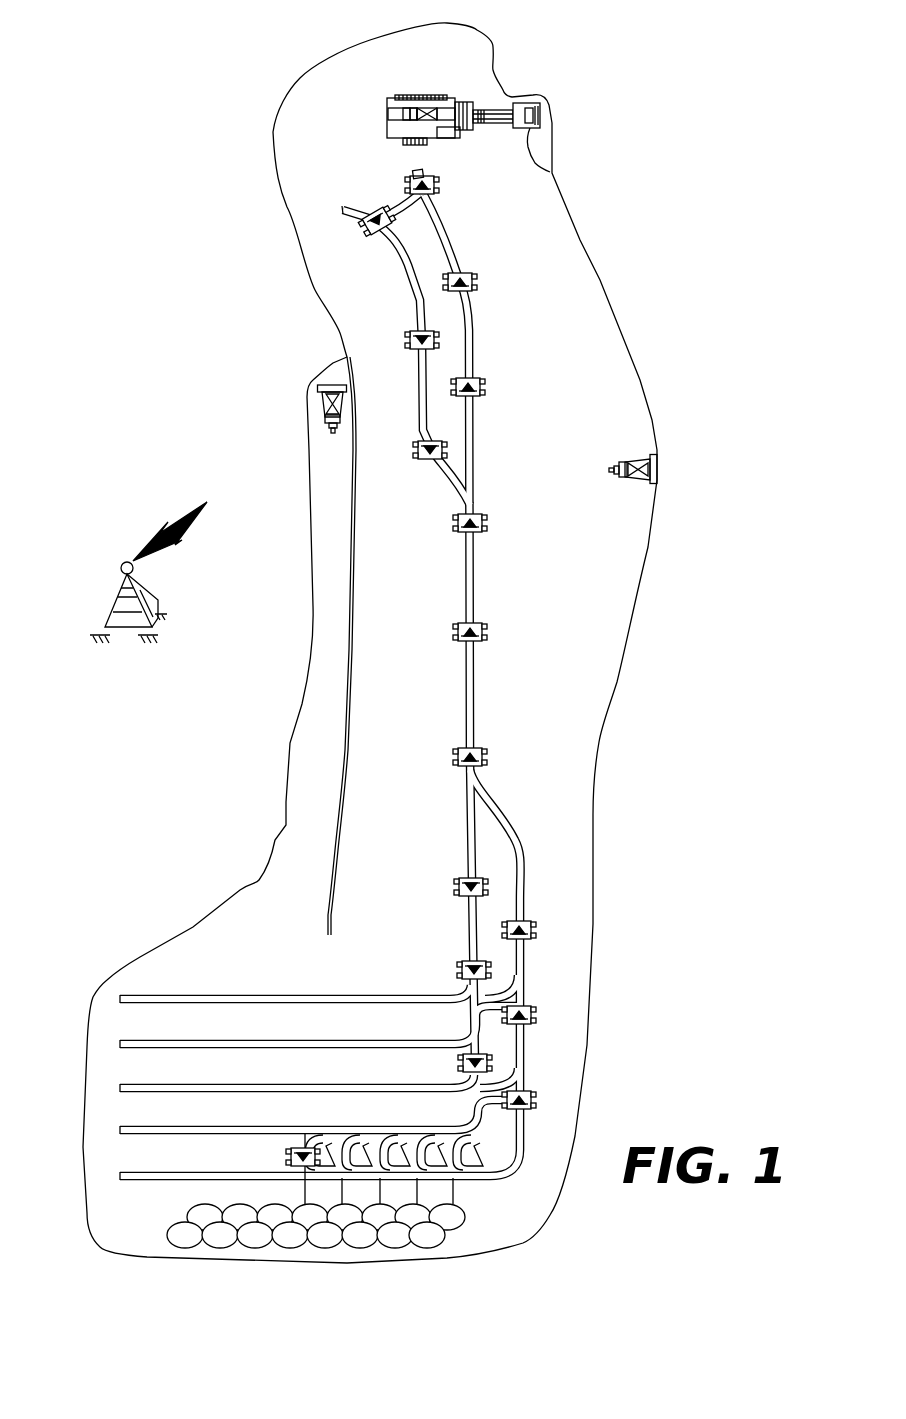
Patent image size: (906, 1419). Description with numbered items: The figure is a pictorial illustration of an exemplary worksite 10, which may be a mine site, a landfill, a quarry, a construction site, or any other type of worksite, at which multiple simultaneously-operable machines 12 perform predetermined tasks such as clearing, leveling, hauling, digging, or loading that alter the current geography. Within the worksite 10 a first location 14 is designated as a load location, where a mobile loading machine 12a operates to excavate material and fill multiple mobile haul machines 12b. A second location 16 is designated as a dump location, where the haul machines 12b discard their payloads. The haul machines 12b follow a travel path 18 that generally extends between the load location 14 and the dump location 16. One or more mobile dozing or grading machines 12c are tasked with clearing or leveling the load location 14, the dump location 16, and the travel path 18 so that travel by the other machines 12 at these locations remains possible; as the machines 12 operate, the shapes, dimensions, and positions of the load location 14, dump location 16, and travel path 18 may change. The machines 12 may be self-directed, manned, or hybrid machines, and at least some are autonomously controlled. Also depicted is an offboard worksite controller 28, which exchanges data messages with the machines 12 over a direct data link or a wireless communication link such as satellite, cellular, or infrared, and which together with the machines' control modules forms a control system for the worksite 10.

The worksite 10 is at (719, 1052).
The machines 12 is at (473, 193).
The mobile loading machine 12a is at (388, 95).
The mobile haul machines 12b is at (487, 523).
The mobile dozing or grading machines 12c is at (330, 385).
The first location 14 is at (349, 136).
The second location 16 is at (519, 1219).
The travel path 18 is at (474, 690).
The offboard worksite controller 28 is at (125, 568).